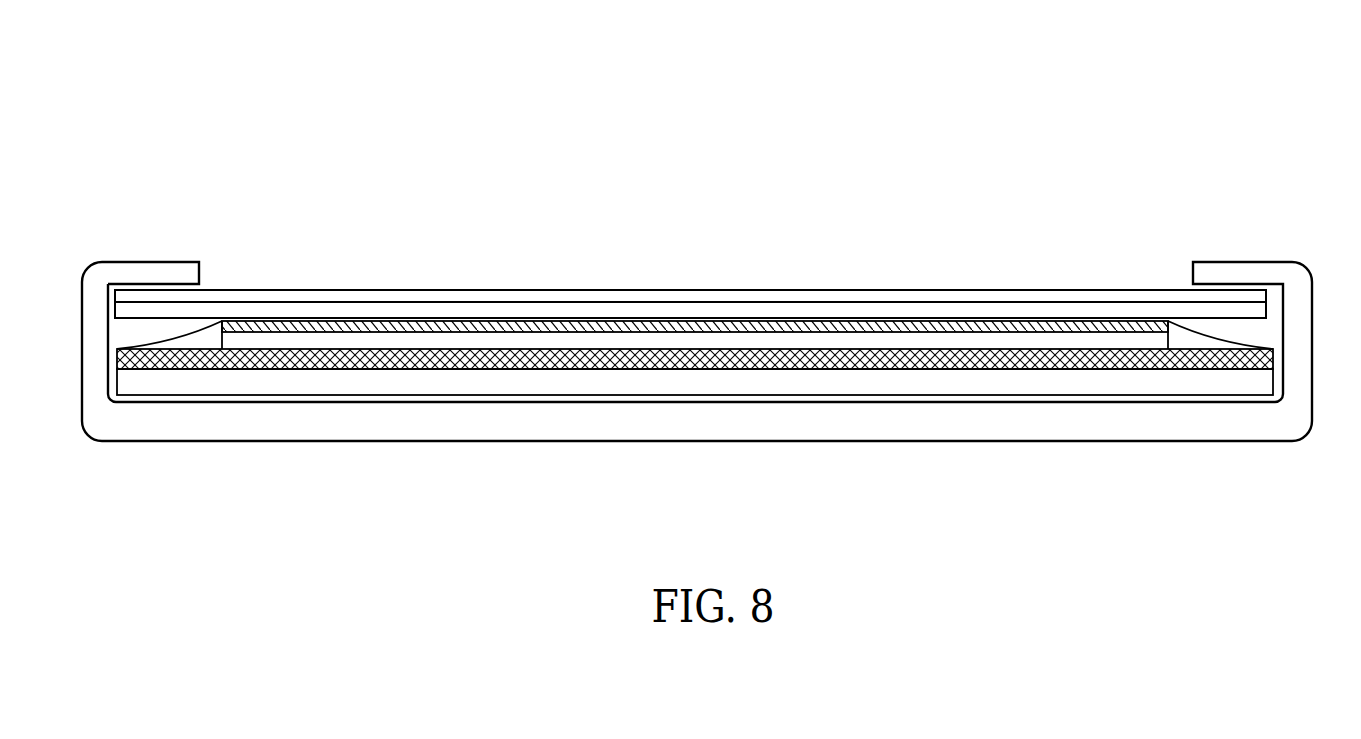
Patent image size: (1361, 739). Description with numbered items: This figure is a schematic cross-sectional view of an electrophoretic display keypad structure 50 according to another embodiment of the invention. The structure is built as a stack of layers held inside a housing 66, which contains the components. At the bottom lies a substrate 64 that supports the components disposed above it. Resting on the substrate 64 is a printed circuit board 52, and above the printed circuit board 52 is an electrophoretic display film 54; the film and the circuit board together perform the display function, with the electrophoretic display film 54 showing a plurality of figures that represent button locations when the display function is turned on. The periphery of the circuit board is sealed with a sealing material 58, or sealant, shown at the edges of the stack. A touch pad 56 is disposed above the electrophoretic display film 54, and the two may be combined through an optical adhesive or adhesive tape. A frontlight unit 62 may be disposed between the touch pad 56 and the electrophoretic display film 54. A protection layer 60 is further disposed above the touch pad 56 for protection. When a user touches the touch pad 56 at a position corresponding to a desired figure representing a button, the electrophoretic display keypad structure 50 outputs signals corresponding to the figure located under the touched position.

The electrophoretic display keypad structure 50 is at (1203, 127).
The printed circuit board 52 is at (1270, 354).
The electrophoretic display film 54 is at (1083, 338).
The touch pad 56 is at (1260, 310).
The sealing material 58 is at (1193, 340).
The protection layer 60 is at (748, 298).
The frontlight unit 62 is at (682, 328).
The substrate 64 is at (1125, 385).
The housing 66 is at (175, 270).